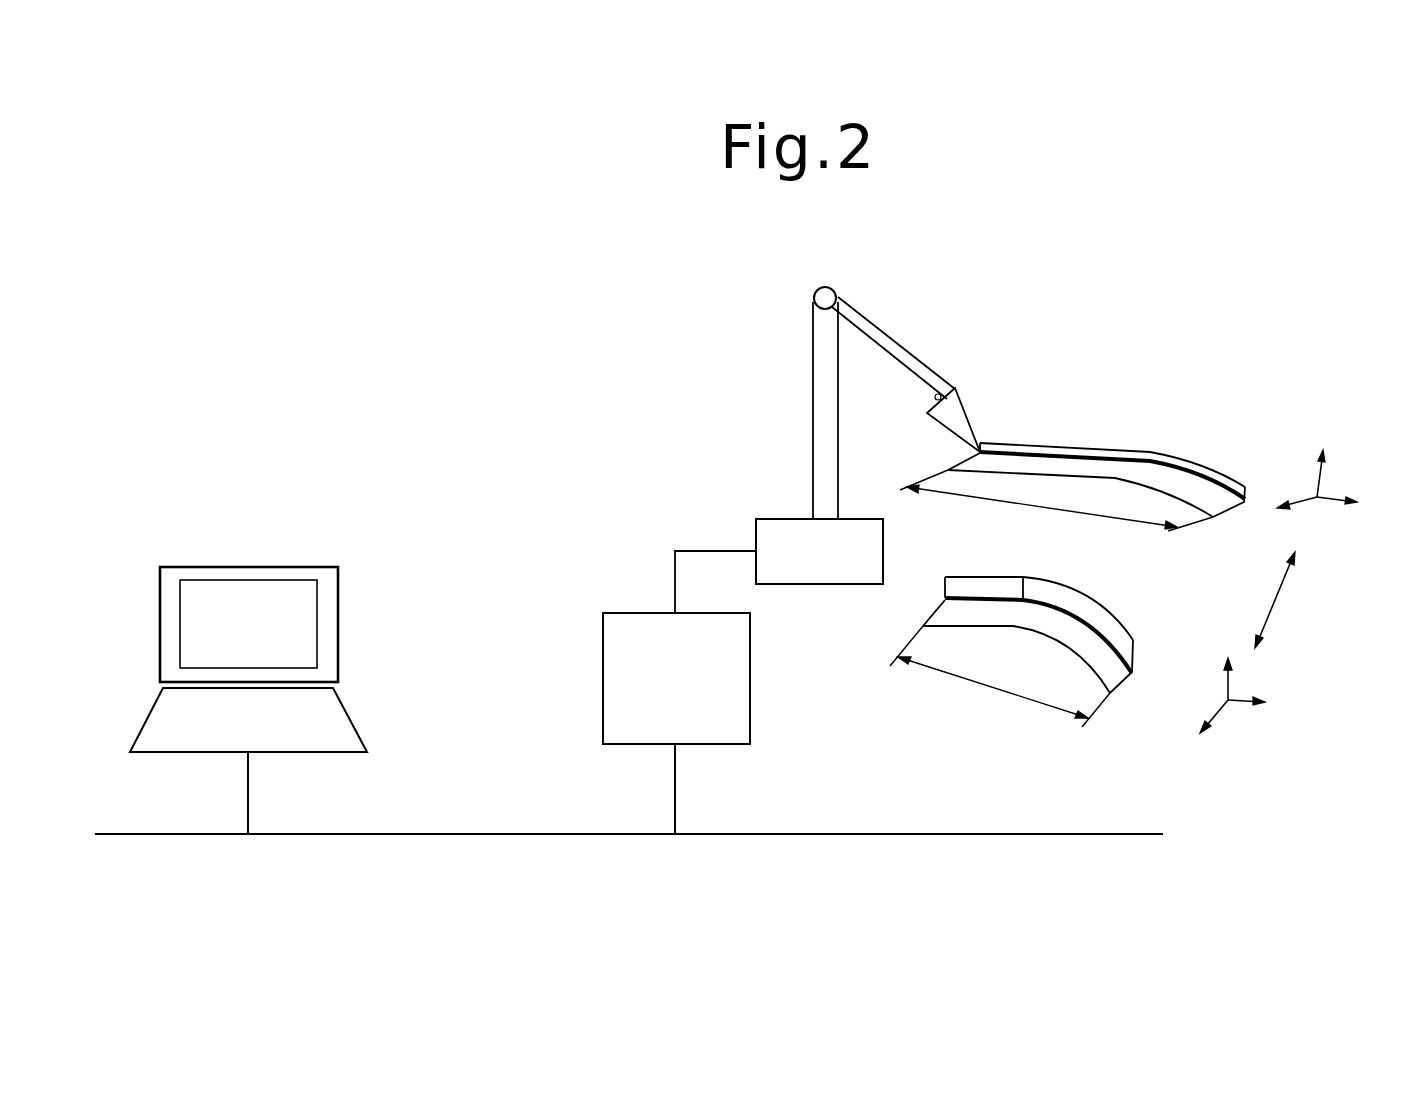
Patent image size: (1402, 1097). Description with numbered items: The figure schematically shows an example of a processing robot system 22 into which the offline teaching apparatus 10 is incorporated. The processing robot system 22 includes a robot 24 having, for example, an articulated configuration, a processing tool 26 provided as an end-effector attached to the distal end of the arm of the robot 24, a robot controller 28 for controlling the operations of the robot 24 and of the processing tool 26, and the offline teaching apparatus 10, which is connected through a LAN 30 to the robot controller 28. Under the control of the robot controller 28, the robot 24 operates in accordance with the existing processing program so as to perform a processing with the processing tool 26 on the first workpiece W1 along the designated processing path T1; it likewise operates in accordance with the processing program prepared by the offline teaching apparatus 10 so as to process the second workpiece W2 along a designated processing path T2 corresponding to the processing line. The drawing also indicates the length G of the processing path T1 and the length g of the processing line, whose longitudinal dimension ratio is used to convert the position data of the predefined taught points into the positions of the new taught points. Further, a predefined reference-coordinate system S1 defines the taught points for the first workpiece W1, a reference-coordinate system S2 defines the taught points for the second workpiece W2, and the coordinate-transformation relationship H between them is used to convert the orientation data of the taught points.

The offline teaching apparatus 10 is at (203, 560).
The processing robot system 22 is at (480, 318).
The robot 24 is at (805, 378).
The processing tool 26 is at (972, 404).
The robot controller 28 is at (598, 646).
The LAN 30 is at (483, 838).
The first workpiece W1 is at (1093, 600).
The second workpiece W2 is at (1210, 458).
The processing path T1 is at (1023, 577).
The processing path T2 is at (1112, 455).
The length of the processing path G is at (1000, 676).
The length of the processing line g is at (1056, 501).
The coordinate-transformation relationship H is at (1281, 600).
The reference-coordinate system S1 is at (1234, 702).
The reference-coordinate system S2 is at (1317, 498).